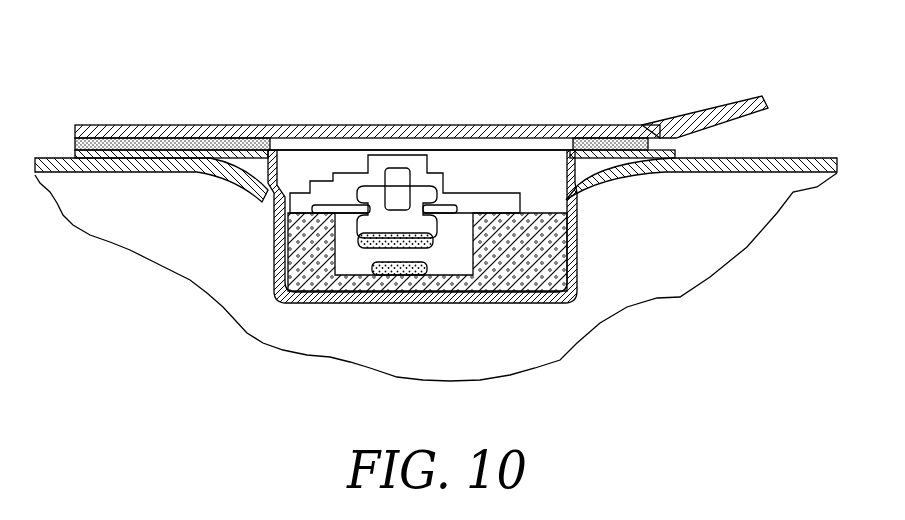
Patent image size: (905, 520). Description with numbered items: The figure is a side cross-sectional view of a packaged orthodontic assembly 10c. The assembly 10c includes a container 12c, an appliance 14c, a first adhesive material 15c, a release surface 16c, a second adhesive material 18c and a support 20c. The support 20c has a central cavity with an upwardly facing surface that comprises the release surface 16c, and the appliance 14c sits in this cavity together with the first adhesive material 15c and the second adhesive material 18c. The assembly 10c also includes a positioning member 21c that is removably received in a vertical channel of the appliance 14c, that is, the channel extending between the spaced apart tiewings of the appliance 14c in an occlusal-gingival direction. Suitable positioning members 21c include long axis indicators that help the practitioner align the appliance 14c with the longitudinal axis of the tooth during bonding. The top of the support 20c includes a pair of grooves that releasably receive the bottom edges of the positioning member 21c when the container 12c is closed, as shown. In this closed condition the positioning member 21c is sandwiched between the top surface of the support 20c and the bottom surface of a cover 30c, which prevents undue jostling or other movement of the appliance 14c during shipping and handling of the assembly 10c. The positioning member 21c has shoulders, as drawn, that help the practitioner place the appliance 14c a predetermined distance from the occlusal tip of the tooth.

The packaged orthodontic assembly 10c is at (181, 83).
The container 12c is at (290, 126).
The appliance 14c is at (440, 226).
The first adhesive material 15c is at (377, 249).
The release surface 16c is at (443, 272).
The second adhesive material 18c is at (400, 256).
The support 20c is at (288, 230).
The positioning member 21c is at (378, 155).
The cover 30c is at (512, 122).